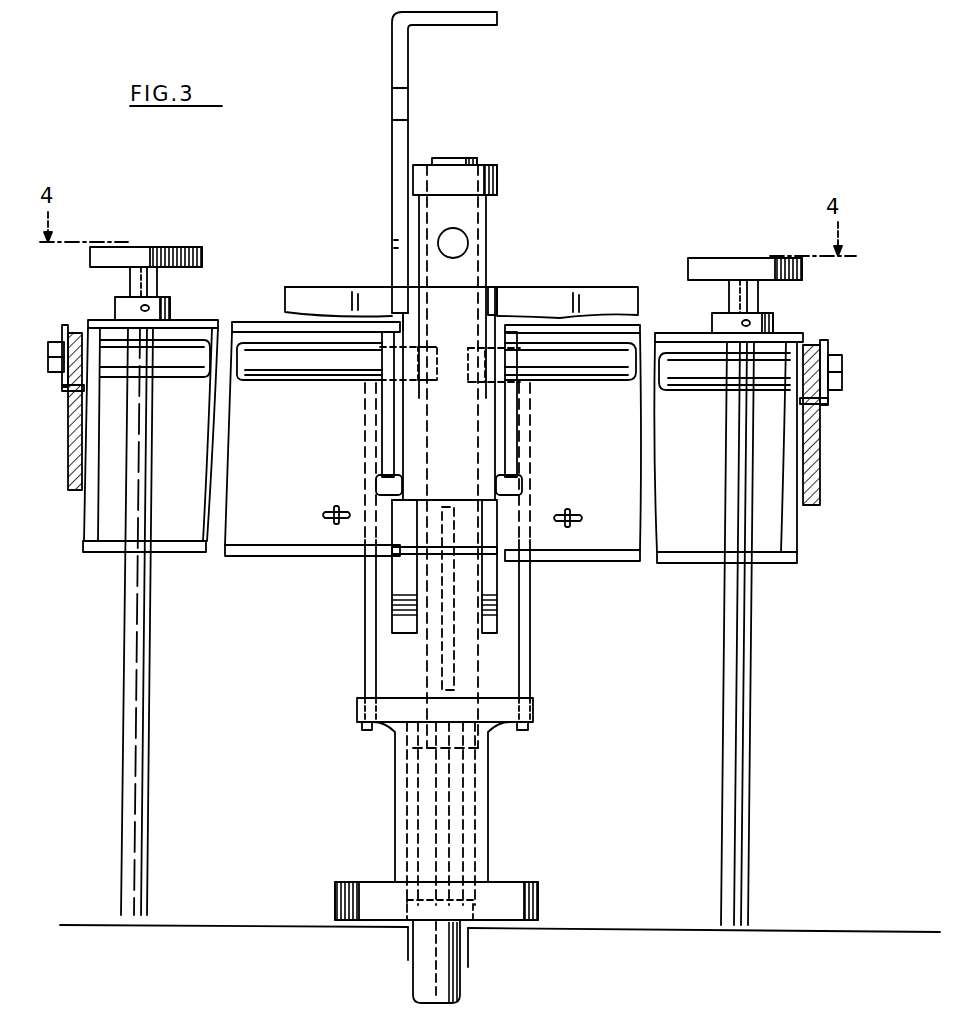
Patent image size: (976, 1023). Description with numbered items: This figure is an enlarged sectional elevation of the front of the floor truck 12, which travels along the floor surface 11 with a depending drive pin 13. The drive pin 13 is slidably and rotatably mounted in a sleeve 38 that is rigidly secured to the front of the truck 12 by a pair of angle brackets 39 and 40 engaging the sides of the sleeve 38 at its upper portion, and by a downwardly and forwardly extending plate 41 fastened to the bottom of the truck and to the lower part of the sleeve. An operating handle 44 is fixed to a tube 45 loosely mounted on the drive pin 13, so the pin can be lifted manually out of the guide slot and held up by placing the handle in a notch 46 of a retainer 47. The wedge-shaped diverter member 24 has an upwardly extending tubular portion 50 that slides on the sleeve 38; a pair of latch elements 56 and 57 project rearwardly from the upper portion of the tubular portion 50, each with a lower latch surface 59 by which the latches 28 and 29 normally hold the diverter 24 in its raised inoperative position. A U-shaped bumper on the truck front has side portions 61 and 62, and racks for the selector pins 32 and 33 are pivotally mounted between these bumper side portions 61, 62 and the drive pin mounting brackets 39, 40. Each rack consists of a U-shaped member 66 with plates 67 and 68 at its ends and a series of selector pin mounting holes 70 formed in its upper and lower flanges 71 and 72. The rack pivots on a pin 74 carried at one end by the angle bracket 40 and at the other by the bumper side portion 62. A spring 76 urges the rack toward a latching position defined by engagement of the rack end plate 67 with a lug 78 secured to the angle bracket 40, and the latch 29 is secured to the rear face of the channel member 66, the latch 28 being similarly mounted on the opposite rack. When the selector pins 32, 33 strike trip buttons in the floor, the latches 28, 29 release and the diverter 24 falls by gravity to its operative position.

The surface 11 is at (640, 931).
The floor truck 12 is at (590, 294).
The drive pin 13 is at (460, 158).
The diverter member 24 is at (522, 885).
The latch 28 is at (364, 640).
The latch 29 is at (526, 660).
The selector pin 32 is at (138, 708).
The selector pin 33 is at (745, 719).
The sleeve 38 is at (486, 302).
The angle bracket 39 is at (410, 302).
The angle bracket 40 is at (497, 313).
The plate 41 is at (450, 690).
The operating handle 44 is at (456, 242).
The tube 45 is at (488, 244).
The notch 46 is at (400, 94).
The retainer 47 is at (410, 108).
The tubular portion 50 is at (490, 811).
The latch element 56 is at (355, 711).
The latch element 57 is at (535, 710).
The latch surface 59 is at (384, 724).
The bumper side portion 61 is at (72, 458).
The bumper side portion 62 is at (812, 462).
The U-shaped member 66 is at (705, 541).
The plate 67 is at (510, 448).
The plate 68 is at (787, 455).
The selector pin mounting holes 70 is at (600, 561).
The upper flange 71 is at (690, 330).
The lower flange 72 is at (765, 568).
The pin 74 is at (592, 372).
The spring 76 is at (573, 514).
The lug 78 is at (515, 491).